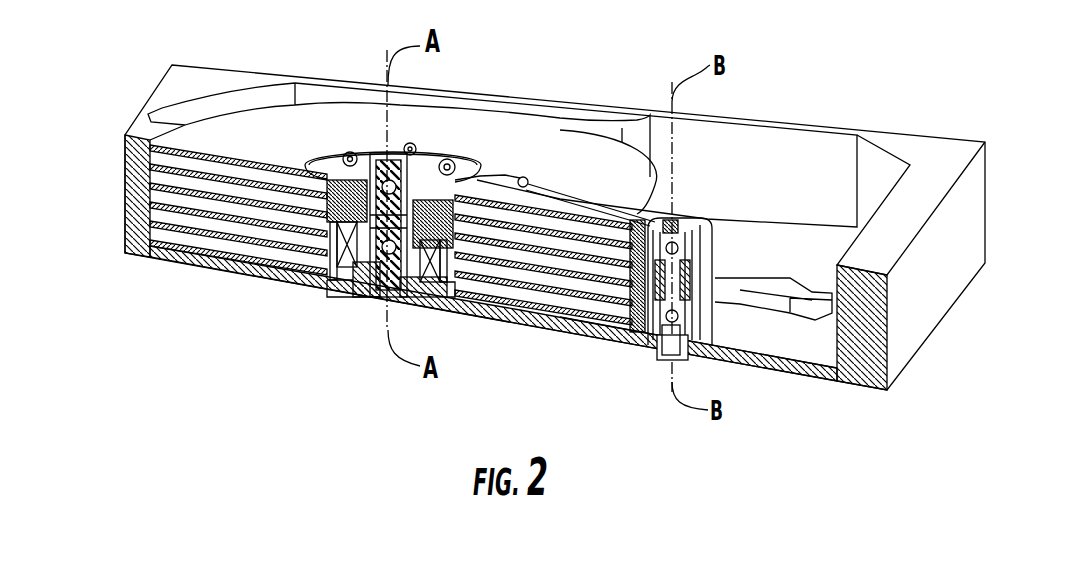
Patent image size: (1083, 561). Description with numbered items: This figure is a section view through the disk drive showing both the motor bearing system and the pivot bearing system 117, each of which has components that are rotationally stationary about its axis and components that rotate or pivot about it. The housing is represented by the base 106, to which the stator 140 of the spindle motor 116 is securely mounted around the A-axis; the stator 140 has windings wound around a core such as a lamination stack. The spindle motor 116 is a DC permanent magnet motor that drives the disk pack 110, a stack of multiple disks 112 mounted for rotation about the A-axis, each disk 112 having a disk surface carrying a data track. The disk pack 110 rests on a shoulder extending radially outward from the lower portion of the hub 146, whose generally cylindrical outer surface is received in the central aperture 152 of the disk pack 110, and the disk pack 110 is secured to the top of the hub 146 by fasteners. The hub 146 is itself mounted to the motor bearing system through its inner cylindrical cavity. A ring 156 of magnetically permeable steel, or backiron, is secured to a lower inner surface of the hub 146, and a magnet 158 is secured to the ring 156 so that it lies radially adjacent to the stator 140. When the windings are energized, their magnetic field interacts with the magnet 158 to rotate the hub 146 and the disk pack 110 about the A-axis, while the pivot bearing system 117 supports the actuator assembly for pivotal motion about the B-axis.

The base 106 is at (831, 378).
The disk pack 110 is at (165, 248).
The disks 112 is at (120, 138).
The spindle motor 116 is at (376, 203).
The pivot bearing system 117 is at (627, 357).
The stator 140 is at (348, 277).
The hub 146 is at (470, 222).
The central aperture 152 is at (343, 190).
The ring 156 is at (347, 252).
The magnet 158 is at (307, 257).